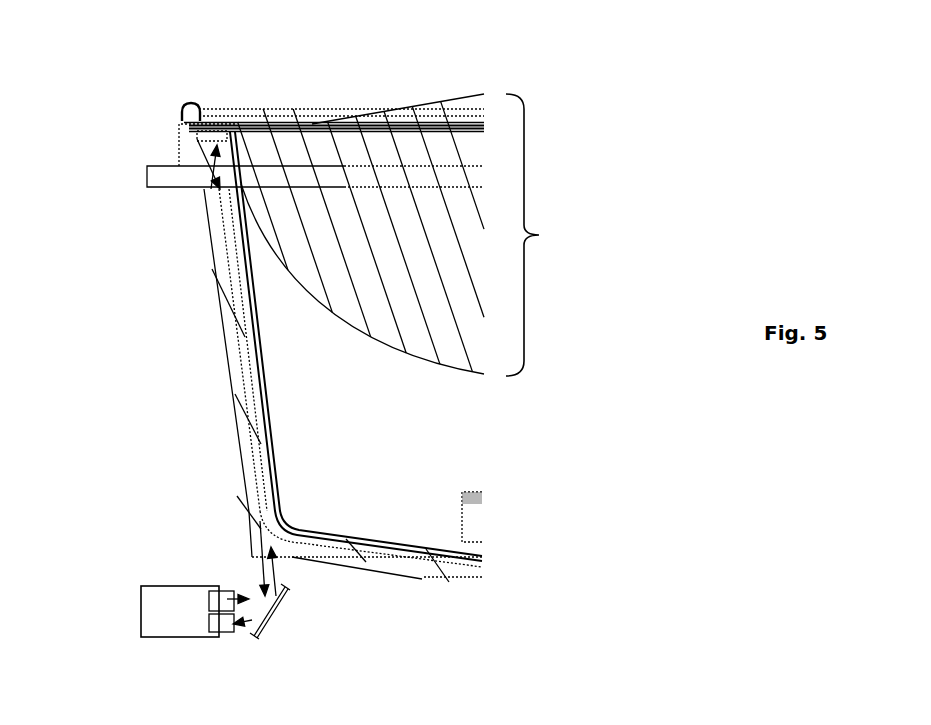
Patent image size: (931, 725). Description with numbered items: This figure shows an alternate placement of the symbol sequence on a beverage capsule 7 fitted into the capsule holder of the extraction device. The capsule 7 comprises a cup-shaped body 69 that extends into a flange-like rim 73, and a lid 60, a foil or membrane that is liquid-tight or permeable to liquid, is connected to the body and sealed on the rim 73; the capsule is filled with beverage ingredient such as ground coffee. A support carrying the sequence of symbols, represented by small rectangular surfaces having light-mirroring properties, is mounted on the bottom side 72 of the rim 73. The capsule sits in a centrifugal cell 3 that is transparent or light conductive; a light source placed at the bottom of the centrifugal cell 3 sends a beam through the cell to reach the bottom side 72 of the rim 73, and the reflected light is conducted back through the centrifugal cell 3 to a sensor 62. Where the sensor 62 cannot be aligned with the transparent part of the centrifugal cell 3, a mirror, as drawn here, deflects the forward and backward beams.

The centrifugal cell 3 is at (208, 369).
The capsule 7 is at (537, 235).
The lid 60 is at (469, 85).
The sensor 62 is at (149, 603).
The cup-shaped body 69 is at (395, 363).
The bottom side of the rim 72 is at (182, 137).
The flange-like rim 73 is at (171, 102).